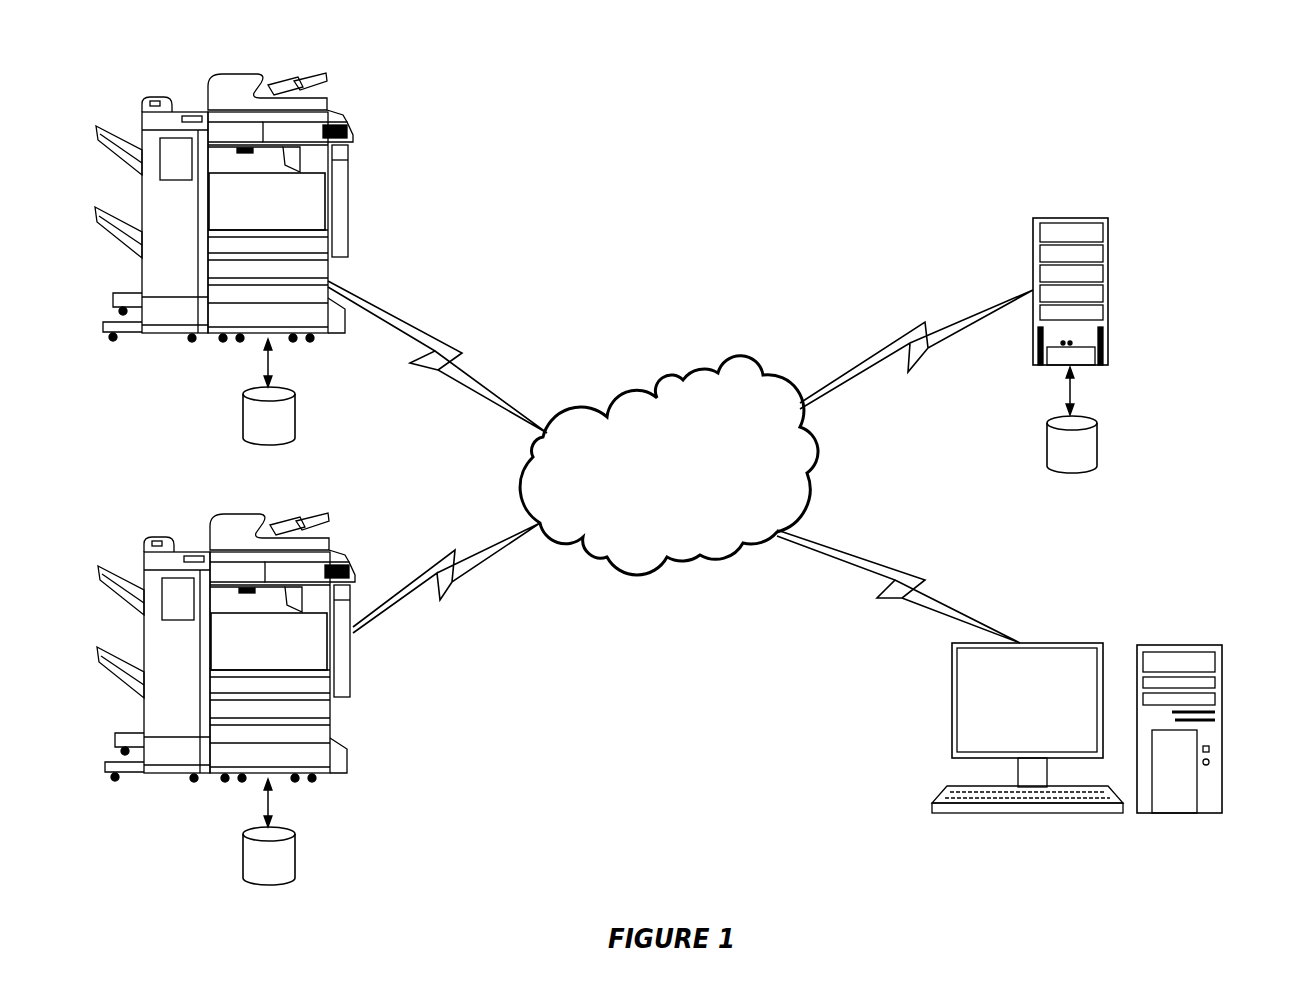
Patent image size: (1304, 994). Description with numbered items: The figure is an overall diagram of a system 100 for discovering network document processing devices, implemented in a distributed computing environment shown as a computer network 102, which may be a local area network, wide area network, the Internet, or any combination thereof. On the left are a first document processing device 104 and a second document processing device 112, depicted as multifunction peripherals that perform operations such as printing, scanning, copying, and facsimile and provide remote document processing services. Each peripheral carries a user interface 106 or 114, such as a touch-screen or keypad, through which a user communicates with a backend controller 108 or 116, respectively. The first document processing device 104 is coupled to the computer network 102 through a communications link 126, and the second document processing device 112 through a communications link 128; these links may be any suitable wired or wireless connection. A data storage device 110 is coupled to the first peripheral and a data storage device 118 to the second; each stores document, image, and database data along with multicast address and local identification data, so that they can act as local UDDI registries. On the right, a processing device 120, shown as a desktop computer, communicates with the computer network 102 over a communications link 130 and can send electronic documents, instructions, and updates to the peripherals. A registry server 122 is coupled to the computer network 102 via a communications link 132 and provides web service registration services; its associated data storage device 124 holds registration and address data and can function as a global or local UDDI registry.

The system 100 is at (906, 70).
The computer network 102 is at (746, 352).
The first document processing device 104 is at (217, 81).
The user interface 106 is at (329, 119).
The controller 108 is at (304, 201).
The data storage device 110 is at (292, 393).
The second document processing device 112 is at (219, 521).
The user interface 114 is at (331, 558).
The controller 116 is at (305, 641).
The data storage device 118 is at (292, 833).
The processing device 120 is at (1163, 645).
The registry server 122 is at (1107, 218).
The data storage device 124 is at (1097, 421).
The communications link 126 is at (455, 345).
The communications link 128 is at (452, 590).
The communications link 130 is at (914, 571).
The communications link 132 is at (923, 322).